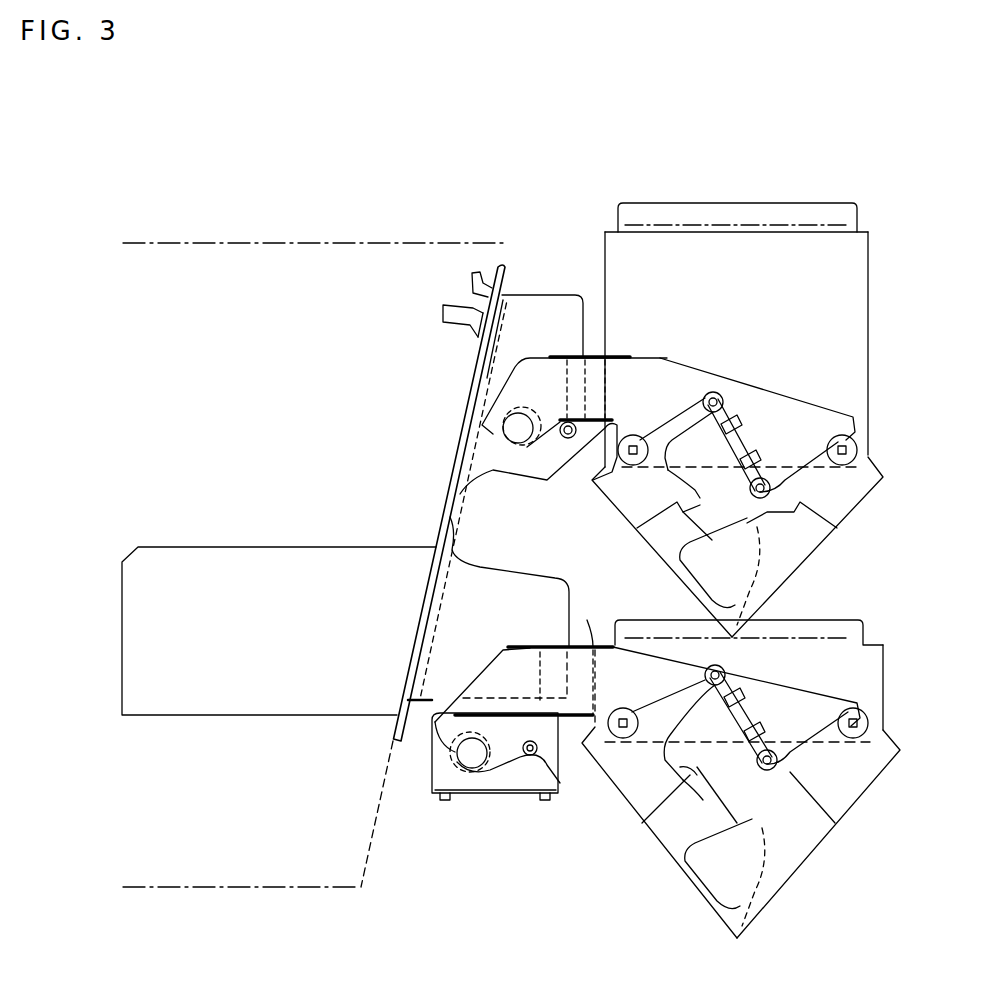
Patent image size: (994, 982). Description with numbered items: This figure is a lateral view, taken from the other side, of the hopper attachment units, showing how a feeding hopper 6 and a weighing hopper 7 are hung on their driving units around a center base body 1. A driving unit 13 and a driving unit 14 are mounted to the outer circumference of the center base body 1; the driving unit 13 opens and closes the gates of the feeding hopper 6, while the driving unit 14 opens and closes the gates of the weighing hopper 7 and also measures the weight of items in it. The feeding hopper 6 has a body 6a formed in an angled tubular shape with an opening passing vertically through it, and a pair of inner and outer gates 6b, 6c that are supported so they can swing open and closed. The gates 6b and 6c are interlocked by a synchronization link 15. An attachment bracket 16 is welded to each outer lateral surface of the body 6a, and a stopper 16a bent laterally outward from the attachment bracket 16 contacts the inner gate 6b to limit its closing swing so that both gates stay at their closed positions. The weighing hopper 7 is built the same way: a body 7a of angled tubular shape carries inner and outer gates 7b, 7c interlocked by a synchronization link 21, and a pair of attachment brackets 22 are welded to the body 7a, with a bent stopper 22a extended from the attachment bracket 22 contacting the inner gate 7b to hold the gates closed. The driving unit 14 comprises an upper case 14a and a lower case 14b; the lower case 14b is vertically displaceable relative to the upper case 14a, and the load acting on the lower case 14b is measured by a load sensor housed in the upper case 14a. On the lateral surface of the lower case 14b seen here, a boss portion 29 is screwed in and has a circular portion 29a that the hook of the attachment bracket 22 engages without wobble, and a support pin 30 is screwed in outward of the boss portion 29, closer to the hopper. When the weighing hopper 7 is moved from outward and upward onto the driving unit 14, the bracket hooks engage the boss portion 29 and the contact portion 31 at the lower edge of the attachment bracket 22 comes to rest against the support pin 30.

The center base body 1 is at (333, 243).
The driving unit 13 is at (535, 286).
The driving unit 14 is at (420, 539).
The upper case 14a is at (500, 566).
The lower case 14b is at (518, 796).
The synchronization link 15 is at (736, 440).
The attachment bracket 16 is at (548, 356).
The stopper 16a is at (700, 482).
The feeding hopper 6 is at (880, 274).
The body 6a is at (869, 375).
The inner gate 6b is at (657, 547).
The outer gate 6c is at (802, 556).
The weighing hopper 7 is at (880, 626).
The body 7a is at (884, 700).
The inner gate 7b is at (663, 845).
The outer gate 7c is at (800, 858).
The synchronization link 21 is at (745, 713).
The attachment bracket 22 is at (487, 670).
The bent stopper 22a is at (692, 770).
The boss portion 29 is at (472, 768).
The circular portion 29a is at (455, 801).
The support pin 30 is at (558, 782).
The contact portion 31 is at (524, 746).